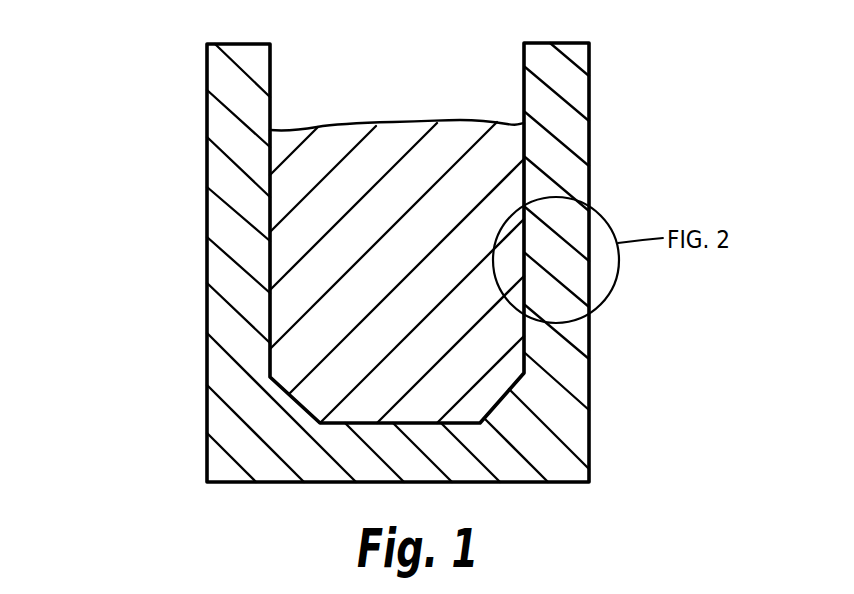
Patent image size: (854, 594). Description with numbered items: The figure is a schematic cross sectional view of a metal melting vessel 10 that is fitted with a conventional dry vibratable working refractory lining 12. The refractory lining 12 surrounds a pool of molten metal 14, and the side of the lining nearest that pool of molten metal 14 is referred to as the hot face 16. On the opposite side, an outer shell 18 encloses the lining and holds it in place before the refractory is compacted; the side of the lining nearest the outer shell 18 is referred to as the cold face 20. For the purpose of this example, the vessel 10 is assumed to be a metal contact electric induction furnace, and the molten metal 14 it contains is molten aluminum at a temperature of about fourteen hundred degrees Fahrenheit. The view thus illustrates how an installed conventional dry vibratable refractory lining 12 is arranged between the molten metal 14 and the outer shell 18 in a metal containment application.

The metal melting vessel 10 is at (168, 374).
The working refractory lining 12 is at (563, 177).
The pool of molten metal 14 is at (493, 388).
The hot face 16 is at (270, 203).
The outer shell 18 is at (592, 450).
The cold face 20 is at (205, 270).